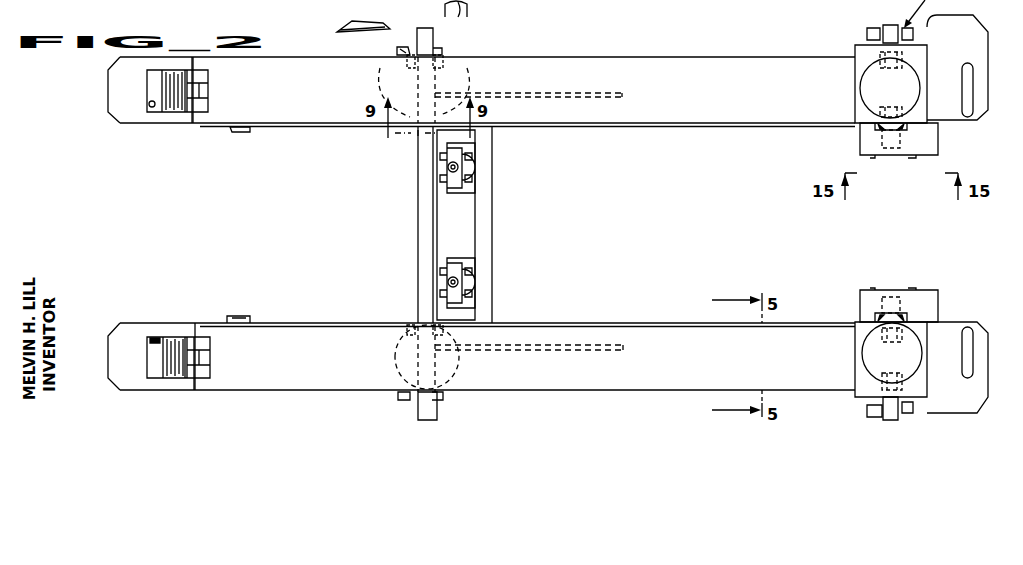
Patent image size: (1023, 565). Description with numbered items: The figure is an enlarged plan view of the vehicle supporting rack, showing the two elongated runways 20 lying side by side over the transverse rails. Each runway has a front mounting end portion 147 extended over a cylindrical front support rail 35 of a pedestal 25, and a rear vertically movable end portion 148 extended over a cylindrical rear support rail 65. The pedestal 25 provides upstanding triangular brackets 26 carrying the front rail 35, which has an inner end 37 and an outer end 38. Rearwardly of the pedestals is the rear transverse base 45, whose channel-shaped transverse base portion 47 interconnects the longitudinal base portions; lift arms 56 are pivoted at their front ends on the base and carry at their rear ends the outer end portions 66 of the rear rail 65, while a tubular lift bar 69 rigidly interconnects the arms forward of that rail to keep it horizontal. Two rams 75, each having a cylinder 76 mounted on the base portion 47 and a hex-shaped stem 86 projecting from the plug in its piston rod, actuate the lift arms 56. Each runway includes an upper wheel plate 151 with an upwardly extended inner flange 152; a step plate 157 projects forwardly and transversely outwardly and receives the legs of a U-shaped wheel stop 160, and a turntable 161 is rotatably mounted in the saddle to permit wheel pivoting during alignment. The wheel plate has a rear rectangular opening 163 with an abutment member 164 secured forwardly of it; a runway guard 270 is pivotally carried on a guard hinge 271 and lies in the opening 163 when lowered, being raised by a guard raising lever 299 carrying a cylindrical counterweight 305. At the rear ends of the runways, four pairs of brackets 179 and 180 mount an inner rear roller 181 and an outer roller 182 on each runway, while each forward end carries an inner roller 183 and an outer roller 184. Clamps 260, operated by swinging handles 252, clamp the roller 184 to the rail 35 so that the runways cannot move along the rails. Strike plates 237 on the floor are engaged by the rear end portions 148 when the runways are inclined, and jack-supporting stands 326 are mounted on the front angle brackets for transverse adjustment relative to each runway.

The runway 20 is at (674, 64).
The pedestal 25 is at (920, 404).
The bracket 26 is at (867, 34).
The front support rail 35 is at (889, 25).
The inner end 37 is at (882, 141).
The outer end 38 is at (885, 418).
The rear transverse base 45 is at (505, 210).
The transverse base portion 47 is at (448, 213).
The lift arm 56 is at (563, 92).
The rear support rail 65 is at (422, 235).
The outer end portion 66 is at (398, 45).
The lift bar 69 is at (493, 228).
The ram 75 is at (482, 172).
The cylinder 76 is at (470, 178).
The stem 86 is at (448, 168).
The front mounting end portion 147 is at (836, 100).
The rear vertically movable end portion 148 is at (118, 90).
The wheel plate 151 is at (645, 78).
The inner flange 152 is at (580, 125).
The step plate 157 is at (973, 51).
The wheel stop 160 is at (966, 68).
The turntable 161 is at (905, 99).
The opening 163 is at (150, 106).
The abutment member 164 is at (203, 93).
The bracket 179 is at (417, 68).
The bracket 180 is at (435, 68).
The inner rear roller 181 is at (418, 128).
The outer roller 182 is at (436, 50).
The inner roller 183 is at (880, 110).
The outer roller 184 is at (880, 56).
The strike plate 237 is at (372, 20).
The handle 252 is at (398, 49).
The clamp 260 is at (418, 49).
The runway guard 270 is at (177, 108).
The guard hinge 271 is at (190, 90).
The guard raising lever 299 is at (415, 5).
The counterweight 305 is at (255, 130).
The jack-supporting stand 326 is at (938, 140).